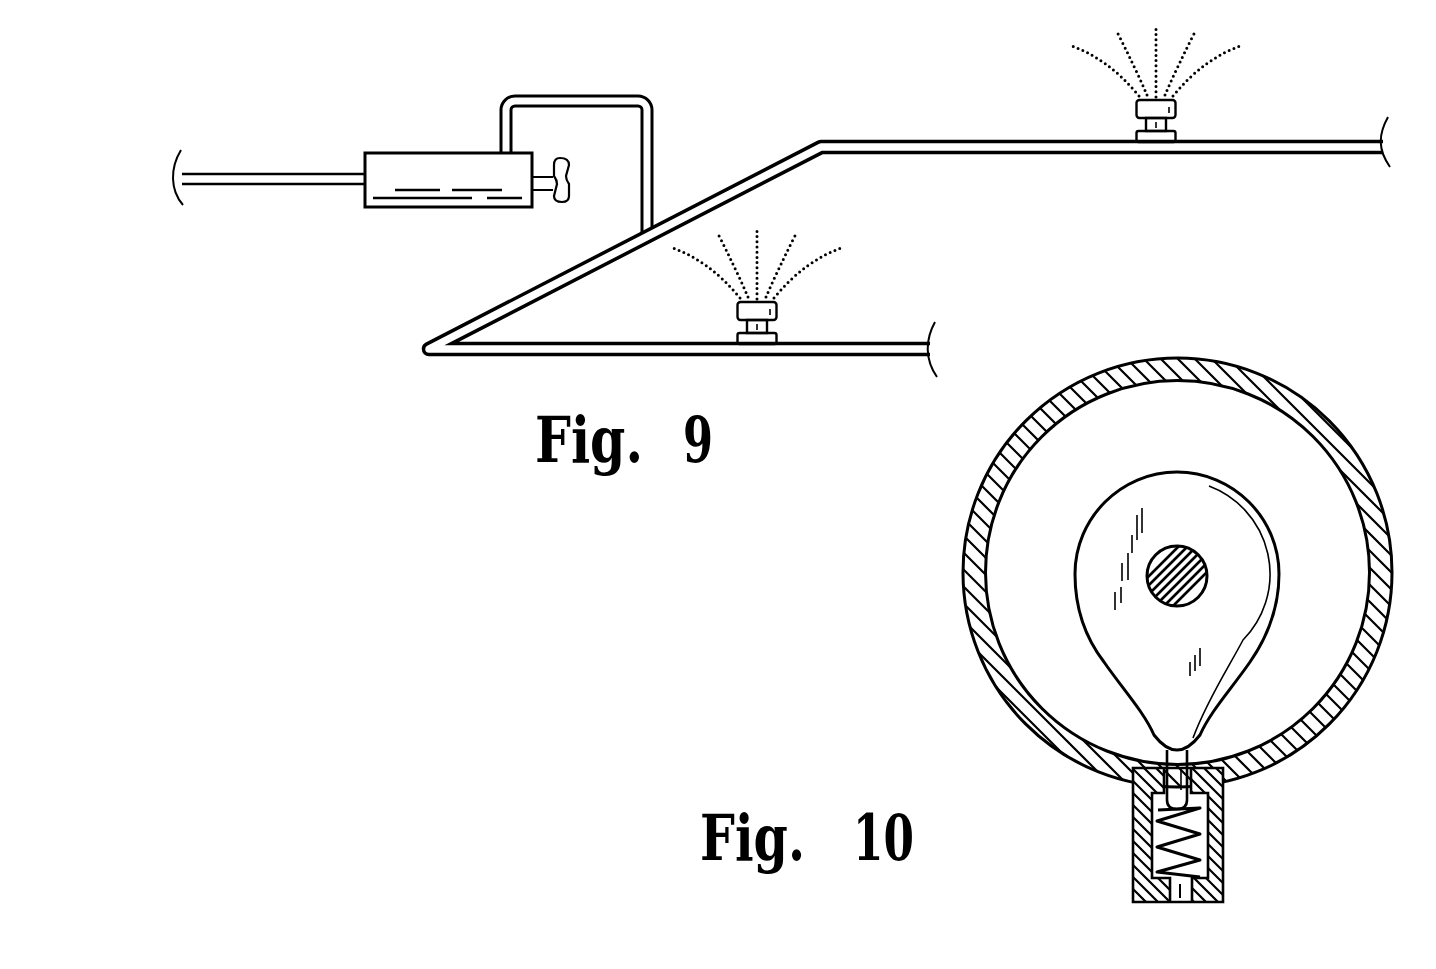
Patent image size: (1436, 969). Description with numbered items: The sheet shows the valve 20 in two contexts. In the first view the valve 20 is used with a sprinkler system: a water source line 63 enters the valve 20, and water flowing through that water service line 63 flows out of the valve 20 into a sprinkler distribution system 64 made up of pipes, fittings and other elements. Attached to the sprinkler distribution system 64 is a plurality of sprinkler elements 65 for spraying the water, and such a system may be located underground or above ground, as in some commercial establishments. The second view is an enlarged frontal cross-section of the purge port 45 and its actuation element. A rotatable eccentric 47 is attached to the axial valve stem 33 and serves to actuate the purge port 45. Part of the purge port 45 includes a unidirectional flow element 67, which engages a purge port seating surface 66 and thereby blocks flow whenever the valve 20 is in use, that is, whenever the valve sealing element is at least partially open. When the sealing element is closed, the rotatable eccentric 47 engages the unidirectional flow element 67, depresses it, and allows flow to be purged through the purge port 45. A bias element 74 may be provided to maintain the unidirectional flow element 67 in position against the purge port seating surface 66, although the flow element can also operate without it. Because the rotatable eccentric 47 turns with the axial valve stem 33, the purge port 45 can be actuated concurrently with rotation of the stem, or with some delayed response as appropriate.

In FIG. 9, the valve 20 is at (427, 152).
In FIG. 10, the valve 20 is at (1114, 663).
In FIG. 10, the axial valve stem 33 is at (1207, 562).
In FIG. 10, the purge port 45 is at (1228, 843).
In FIG. 10, the rotatable eccentric 47 is at (1107, 655).
In FIG. 9, the water source line 63 is at (258, 186).
In FIG. 9, the sprinkler distribution system 64 is at (738, 182).
In FIG. 9, the sprinkler elements 65 is at (1176, 108).
In FIG. 10, the purge port seating surface 66 is at (1148, 795).
In FIG. 10, the unidirectional flow element 67 is at (1214, 798).
In FIG. 10, the bias element 74 is at (1162, 851).